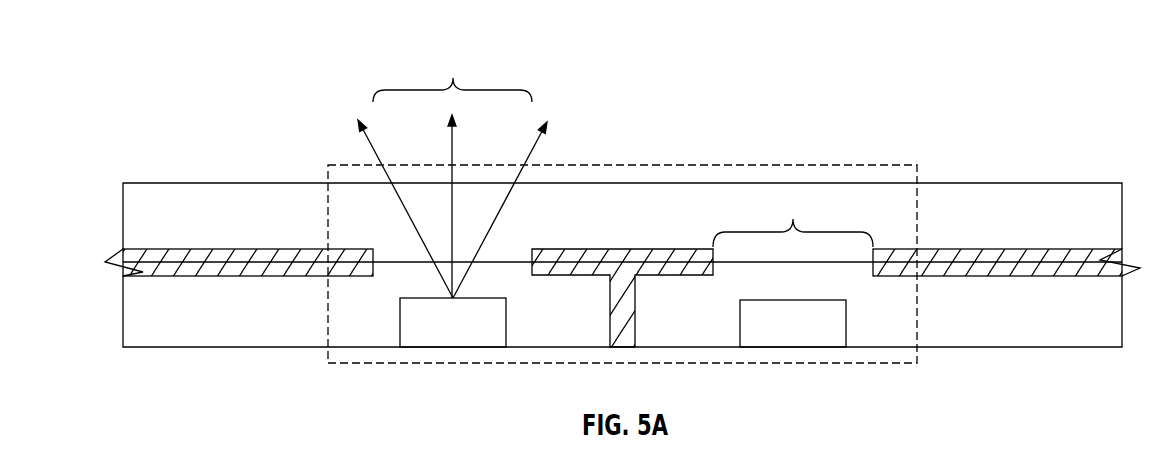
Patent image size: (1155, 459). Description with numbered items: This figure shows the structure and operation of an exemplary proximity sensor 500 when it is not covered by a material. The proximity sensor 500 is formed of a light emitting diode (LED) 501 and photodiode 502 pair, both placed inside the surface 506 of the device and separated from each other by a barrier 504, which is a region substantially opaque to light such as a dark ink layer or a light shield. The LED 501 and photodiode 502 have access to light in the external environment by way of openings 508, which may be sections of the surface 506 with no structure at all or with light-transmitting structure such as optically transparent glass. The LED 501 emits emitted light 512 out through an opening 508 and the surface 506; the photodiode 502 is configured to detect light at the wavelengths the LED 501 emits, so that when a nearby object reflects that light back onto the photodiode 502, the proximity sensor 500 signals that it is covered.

The proximity sensor 500 is at (705, 165).
The light emitting diode 501 is at (453, 350).
The photodiode 502 is at (793, 348).
The barrier 504 is at (272, 258).
The surface 506 is at (975, 183).
The opening 508 is at (623, 132).
The emitted light 512 is at (367, 152).